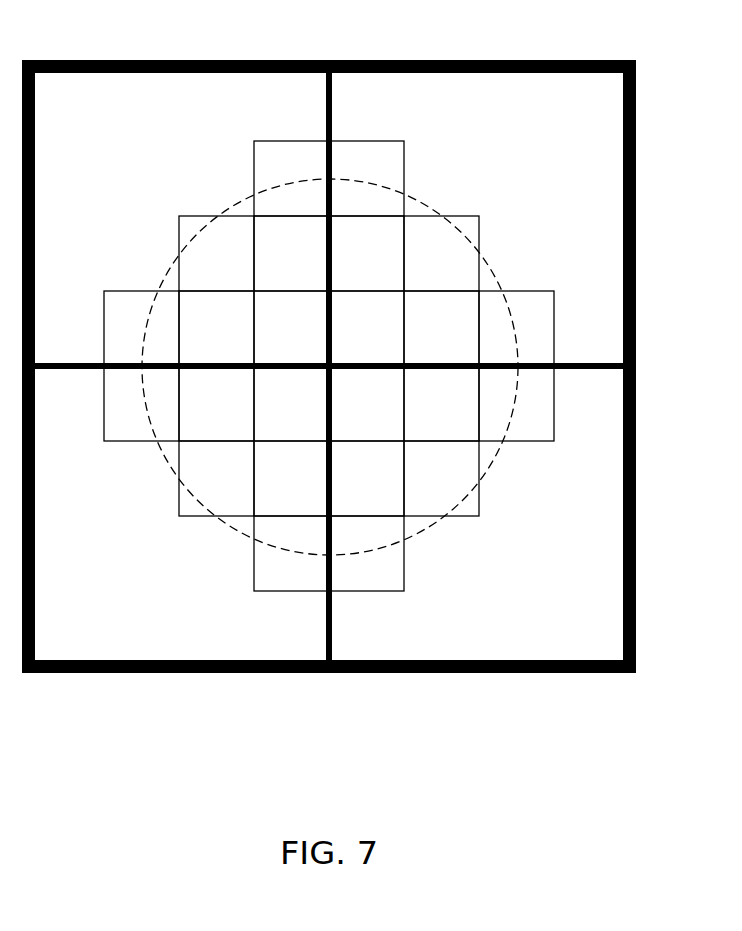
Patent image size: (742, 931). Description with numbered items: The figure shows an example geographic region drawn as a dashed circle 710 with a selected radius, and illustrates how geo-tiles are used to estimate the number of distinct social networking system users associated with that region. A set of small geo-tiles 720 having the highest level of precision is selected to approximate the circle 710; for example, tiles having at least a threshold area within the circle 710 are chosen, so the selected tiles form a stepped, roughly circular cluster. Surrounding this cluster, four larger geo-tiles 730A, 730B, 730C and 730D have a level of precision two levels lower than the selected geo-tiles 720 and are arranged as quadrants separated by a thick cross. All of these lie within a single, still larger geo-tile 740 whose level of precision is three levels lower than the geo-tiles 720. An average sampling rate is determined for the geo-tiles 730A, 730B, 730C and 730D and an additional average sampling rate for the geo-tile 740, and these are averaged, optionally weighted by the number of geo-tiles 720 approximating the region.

The circle 710 is at (428, 205).
The geo-tiles 720 is at (395, 140).
The geo-tile 730A is at (66, 105).
The geo-tile 730B is at (366, 105).
The geo-tile 730C is at (291, 629).
The geo-tile 730D is at (591, 629).
The geo-tile 740 is at (632, 62).